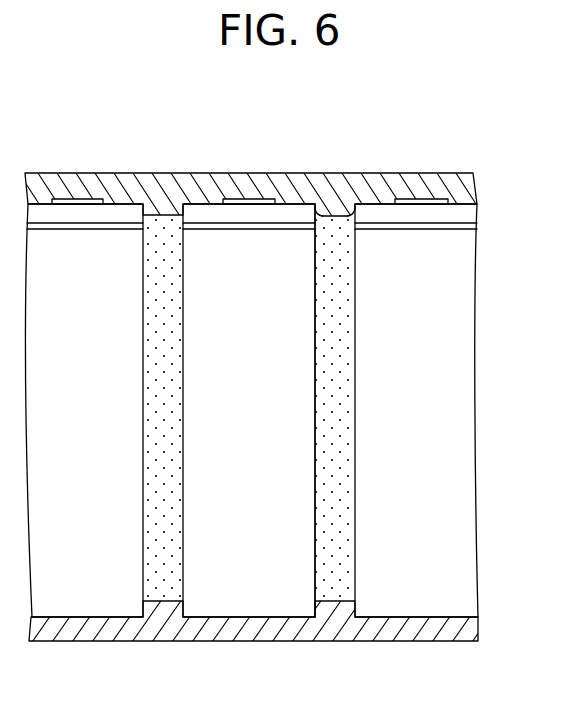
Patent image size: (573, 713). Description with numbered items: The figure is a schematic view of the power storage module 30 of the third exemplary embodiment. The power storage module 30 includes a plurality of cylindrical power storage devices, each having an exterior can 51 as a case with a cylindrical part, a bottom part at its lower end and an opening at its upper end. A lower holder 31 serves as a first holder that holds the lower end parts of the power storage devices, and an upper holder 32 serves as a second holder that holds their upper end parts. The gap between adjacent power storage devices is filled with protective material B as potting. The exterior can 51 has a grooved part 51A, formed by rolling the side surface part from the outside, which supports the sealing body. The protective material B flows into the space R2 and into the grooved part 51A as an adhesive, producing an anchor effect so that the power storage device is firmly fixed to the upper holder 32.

The power storage module 30 is at (484, 133).
The lower holder 31 is at (410, 628).
The upper holder 32 is at (420, 180).
The exterior can 51 is at (253, 553).
The grooved part 51A is at (322, 208).
The protective material B is at (160, 247).
The space R2 is at (348, 212).